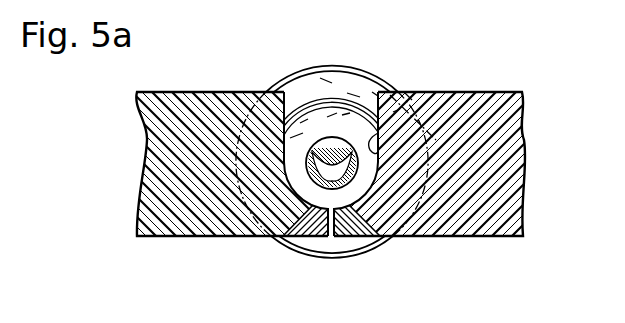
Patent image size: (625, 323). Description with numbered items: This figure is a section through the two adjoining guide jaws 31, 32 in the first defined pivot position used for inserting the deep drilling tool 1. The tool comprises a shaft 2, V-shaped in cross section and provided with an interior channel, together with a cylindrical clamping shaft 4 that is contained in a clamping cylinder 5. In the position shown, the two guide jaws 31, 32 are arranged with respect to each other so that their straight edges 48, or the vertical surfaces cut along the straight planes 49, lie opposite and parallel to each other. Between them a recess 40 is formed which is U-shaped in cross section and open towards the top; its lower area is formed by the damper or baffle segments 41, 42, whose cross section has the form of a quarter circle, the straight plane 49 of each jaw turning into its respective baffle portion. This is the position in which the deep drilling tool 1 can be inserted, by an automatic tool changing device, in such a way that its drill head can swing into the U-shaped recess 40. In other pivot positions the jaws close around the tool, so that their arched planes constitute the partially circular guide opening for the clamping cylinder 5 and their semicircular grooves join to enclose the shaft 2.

The deep drilling tool 1 is at (290, 82).
The shaft 2 is at (319, 162).
The clamping shaft 4 is at (328, 117).
The clamping cylinder 5 is at (360, 85).
The guide jaw 31 is at (500, 128).
The guide jaw 32 is at (158, 157).
The recess 40 is at (281, 132).
The damper or baffle segment 41 is at (352, 205).
The damper or baffle segment 42 is at (316, 203).
The straight edge 48 is at (370, 92).
The straight plane 49 is at (408, 93).